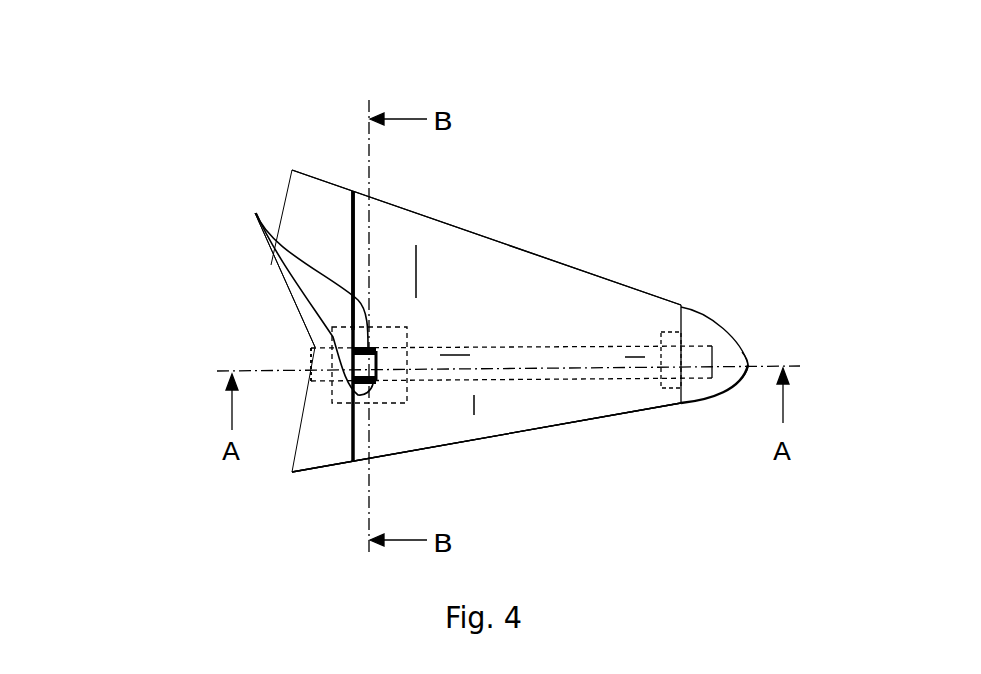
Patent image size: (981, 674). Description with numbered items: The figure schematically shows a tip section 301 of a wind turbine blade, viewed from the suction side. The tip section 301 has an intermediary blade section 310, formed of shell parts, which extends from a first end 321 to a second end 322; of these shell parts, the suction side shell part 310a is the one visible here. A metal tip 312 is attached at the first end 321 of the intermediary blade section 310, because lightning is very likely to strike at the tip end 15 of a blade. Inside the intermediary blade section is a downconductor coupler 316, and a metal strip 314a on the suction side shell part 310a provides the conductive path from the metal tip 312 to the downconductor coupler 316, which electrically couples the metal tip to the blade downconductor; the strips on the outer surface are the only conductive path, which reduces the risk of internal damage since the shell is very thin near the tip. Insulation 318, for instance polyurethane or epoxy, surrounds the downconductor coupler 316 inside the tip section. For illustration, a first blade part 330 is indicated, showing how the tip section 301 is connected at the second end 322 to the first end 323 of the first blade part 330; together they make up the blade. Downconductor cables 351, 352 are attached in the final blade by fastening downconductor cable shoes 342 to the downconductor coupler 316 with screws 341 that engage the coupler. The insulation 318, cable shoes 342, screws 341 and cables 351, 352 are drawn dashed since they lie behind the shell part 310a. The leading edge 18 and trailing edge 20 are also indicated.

The tip section 301 is at (90, 44).
The intermediary blade section 310 is at (505, 304).
The trailing edge 20 is at (498, 235).
The leading edge 18 is at (488, 437).
The suction side shell part 310a is at (600, 412).
The metal tip 312 is at (692, 392).
The tip end 15 is at (748, 365).
The first end 321 is at (668, 324).
The metal strip 314a is at (623, 350).
The second end 322 is at (368, 220).
The first end of the first blade part 323 is at (342, 204).
The downconductor coupler 316 is at (373, 387).
The insulation 318 is at (297, 318).
The first blade part 330 is at (313, 453).
The screws 341 is at (271, 264).
The downconductor cable shoes 342 is at (274, 288).
The downconductor cable 351 is at (312, 350).
The downconductor cable 352 is at (313, 387).